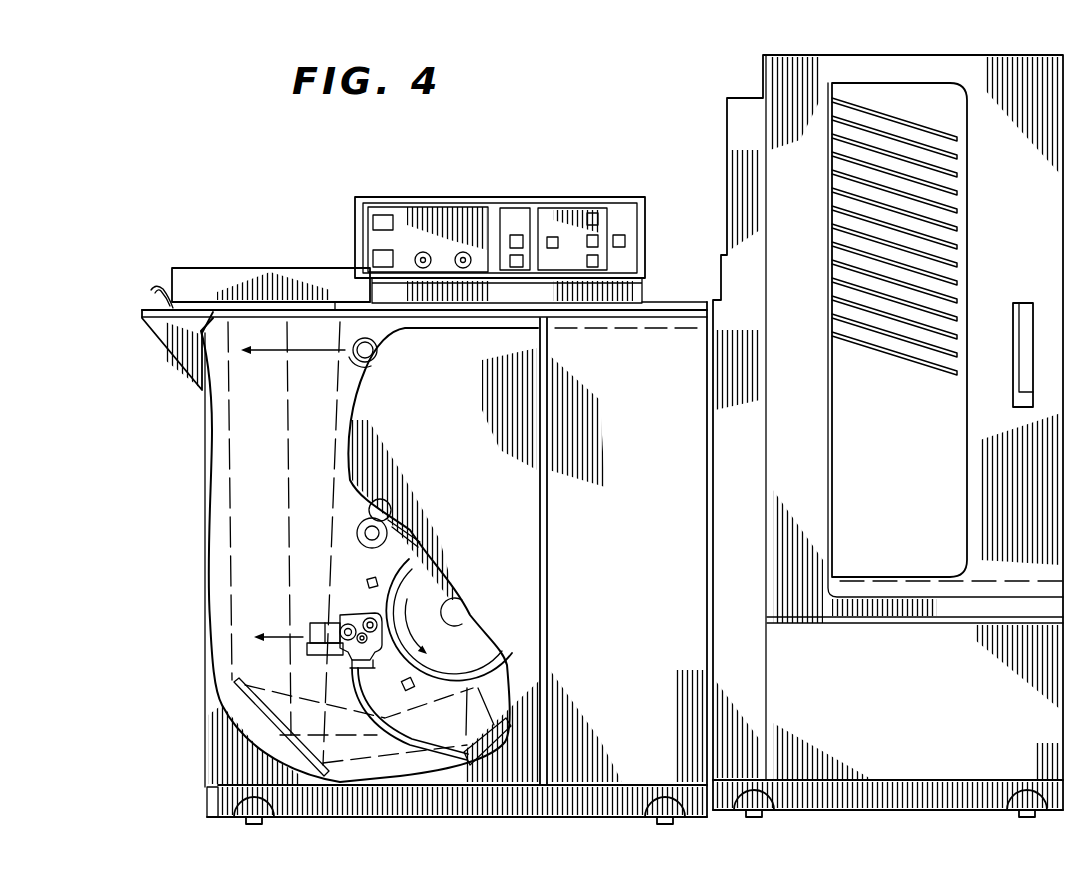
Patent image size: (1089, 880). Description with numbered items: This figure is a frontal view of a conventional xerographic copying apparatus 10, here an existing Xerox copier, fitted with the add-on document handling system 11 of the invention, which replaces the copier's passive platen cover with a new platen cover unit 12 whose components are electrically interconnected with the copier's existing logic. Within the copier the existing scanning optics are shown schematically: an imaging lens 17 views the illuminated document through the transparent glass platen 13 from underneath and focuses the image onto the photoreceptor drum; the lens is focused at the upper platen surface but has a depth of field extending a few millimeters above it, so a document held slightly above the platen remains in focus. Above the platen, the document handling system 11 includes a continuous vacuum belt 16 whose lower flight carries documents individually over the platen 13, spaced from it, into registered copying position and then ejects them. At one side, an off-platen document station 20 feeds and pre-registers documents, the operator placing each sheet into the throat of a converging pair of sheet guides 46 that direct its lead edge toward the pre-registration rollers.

The copying apparatus 10 is at (574, 178).
The document handling system 11 is at (424, 241).
The platen cover unit 12 is at (233, 267).
The transparent glass platen 13 is at (298, 319).
The continuous vacuum belt 16 is at (335, 307).
The imaging lens 17 is at (323, 620).
The off-platen document station 20 is at (156, 304).
The sheet guides 46 is at (153, 298).